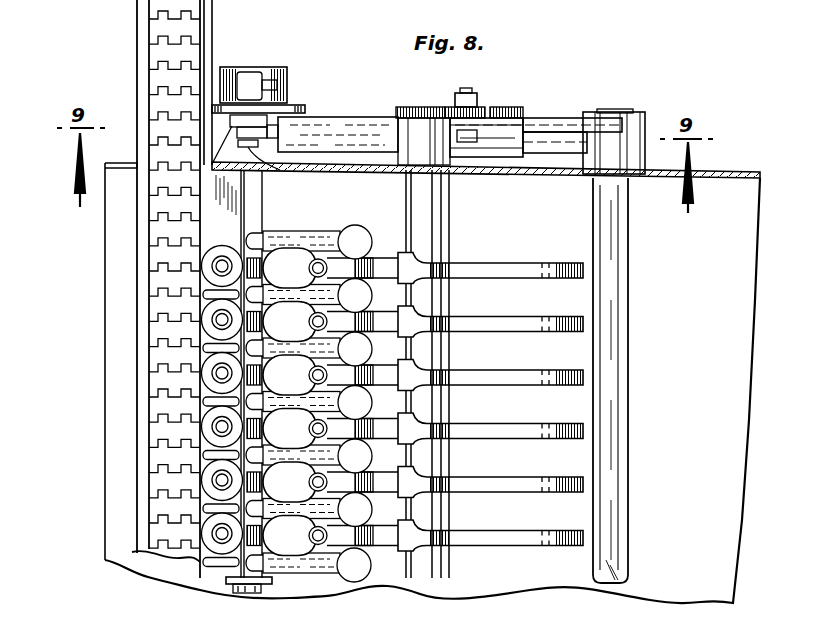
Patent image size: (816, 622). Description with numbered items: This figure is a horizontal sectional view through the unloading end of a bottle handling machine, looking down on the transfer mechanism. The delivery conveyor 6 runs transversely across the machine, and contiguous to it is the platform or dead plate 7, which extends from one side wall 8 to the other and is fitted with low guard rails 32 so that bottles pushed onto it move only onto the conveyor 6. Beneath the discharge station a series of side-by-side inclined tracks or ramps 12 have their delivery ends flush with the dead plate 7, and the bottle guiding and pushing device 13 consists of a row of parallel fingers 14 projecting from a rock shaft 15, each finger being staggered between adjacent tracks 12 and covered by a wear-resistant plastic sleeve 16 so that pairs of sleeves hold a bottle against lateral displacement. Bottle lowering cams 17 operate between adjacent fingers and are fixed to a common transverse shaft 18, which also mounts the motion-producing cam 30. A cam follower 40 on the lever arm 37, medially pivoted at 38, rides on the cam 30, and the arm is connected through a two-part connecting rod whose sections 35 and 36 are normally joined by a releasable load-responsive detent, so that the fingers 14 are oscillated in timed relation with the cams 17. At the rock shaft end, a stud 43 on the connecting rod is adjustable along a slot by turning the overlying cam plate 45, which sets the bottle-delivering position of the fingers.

The delivery conveyor 6 is at (150, 330).
The platform or dead plate 7 is at (225, 212).
The side wall 8 is at (724, 174).
The track or ramp 12 is at (377, 257).
The bottle guiding and pushing device 13 is at (344, 212).
The finger 14 is at (357, 237).
The rock shaft 15 is at (250, 593).
The sleeve 16 is at (308, 230).
The bottle lowering cam 17 is at (511, 274).
The shaft 18 is at (440, 222).
The motion-producing cam 30 is at (517, 114).
The guard rail 32 is at (200, 282).
The connecting rod section 35 is at (552, 140).
The connecting rod section 36 is at (337, 125).
The lever arm 37 is at (543, 125).
The pivot 38 is at (616, 115).
The cam follower 40 is at (480, 108).
The stud 43 is at (280, 170).
The cam plate 45 is at (297, 110).